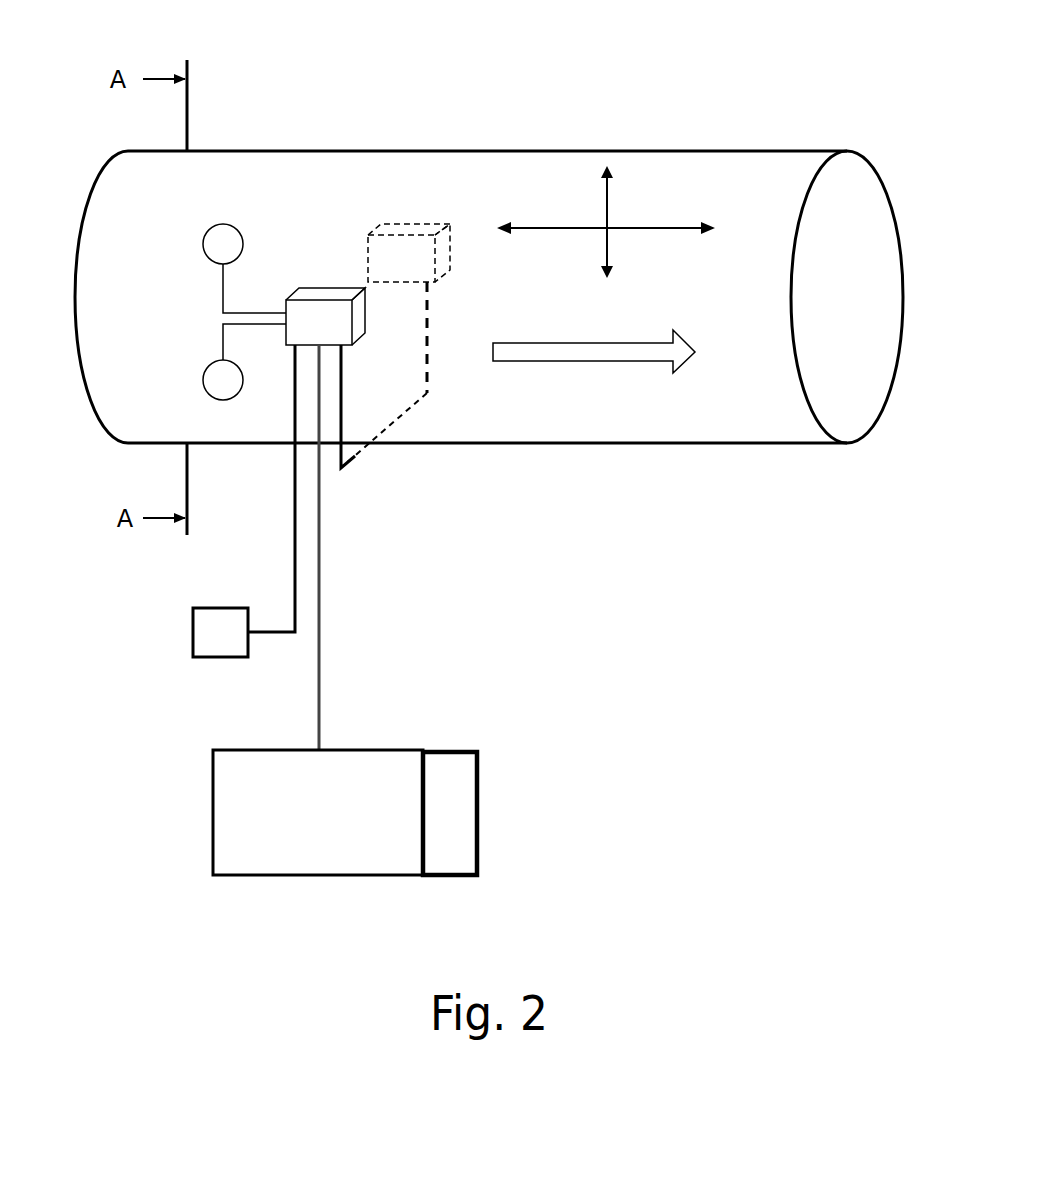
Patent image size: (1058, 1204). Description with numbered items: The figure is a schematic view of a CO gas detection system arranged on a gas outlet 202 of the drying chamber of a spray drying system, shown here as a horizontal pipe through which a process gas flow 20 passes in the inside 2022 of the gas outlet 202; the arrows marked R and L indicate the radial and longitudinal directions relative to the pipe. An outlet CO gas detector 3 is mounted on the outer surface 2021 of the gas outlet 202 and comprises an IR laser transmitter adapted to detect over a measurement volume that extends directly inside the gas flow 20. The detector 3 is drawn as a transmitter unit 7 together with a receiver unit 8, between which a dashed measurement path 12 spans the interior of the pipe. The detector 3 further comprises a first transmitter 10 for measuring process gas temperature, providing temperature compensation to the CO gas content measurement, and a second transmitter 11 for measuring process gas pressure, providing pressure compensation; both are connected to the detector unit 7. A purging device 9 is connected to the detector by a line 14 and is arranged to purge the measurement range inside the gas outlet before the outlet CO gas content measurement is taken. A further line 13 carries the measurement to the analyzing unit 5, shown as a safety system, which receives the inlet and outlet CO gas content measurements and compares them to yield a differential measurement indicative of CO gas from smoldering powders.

The outlet CO gas detector 3 is at (310, 178).
The analyzing unit 5 is at (478, 765).
The gas sensor transmitter QT 7 is at (319, 292).
The reference gas sensor QR 8 is at (421, 226).
The purging device 9 is at (197, 657).
The first transmitter 10 is at (212, 231).
The second transmitter 11 is at (224, 398).
The measurement path 12 is at (353, 462).
The signal line to safety system 13 is at (323, 703).
The signal line to analysis unit 14 is at (292, 535).
The gas flow 20 is at (574, 352).
The gas outlet 202 is at (557, 150).
The outer surface 2021 is at (646, 166).
The inside 2022 is at (873, 225).
The radial direction R is at (610, 205).
The longitudinal direction L is at (680, 228).